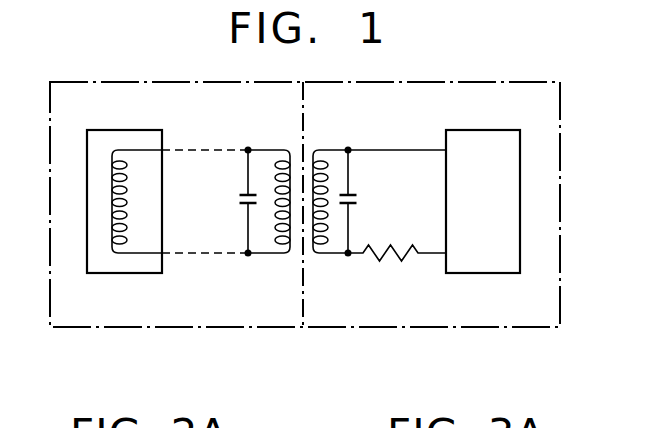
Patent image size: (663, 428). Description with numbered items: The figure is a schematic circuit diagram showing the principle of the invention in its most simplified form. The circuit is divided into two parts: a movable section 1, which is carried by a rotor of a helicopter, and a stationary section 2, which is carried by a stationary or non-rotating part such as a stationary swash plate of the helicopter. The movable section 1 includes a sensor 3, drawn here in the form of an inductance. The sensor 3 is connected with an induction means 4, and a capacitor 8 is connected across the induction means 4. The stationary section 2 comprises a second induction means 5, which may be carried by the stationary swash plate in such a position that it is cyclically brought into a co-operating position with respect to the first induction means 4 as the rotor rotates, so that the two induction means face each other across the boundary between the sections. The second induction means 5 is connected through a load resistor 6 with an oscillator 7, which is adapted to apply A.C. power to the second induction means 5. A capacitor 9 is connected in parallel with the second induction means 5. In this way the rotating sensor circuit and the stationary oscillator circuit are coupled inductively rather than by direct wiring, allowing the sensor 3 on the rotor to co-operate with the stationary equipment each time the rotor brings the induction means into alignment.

The movable section 1 is at (49, 221).
The stationary section 2 is at (562, 250).
The sensor 3 is at (128, 138).
The induction means 4 is at (283, 158).
The second induction means 5 is at (323, 160).
The load resistor 6 is at (404, 250).
The oscillator 7 is at (486, 138).
The capacitor 8 is at (243, 195).
The capacitor 9 is at (355, 194).